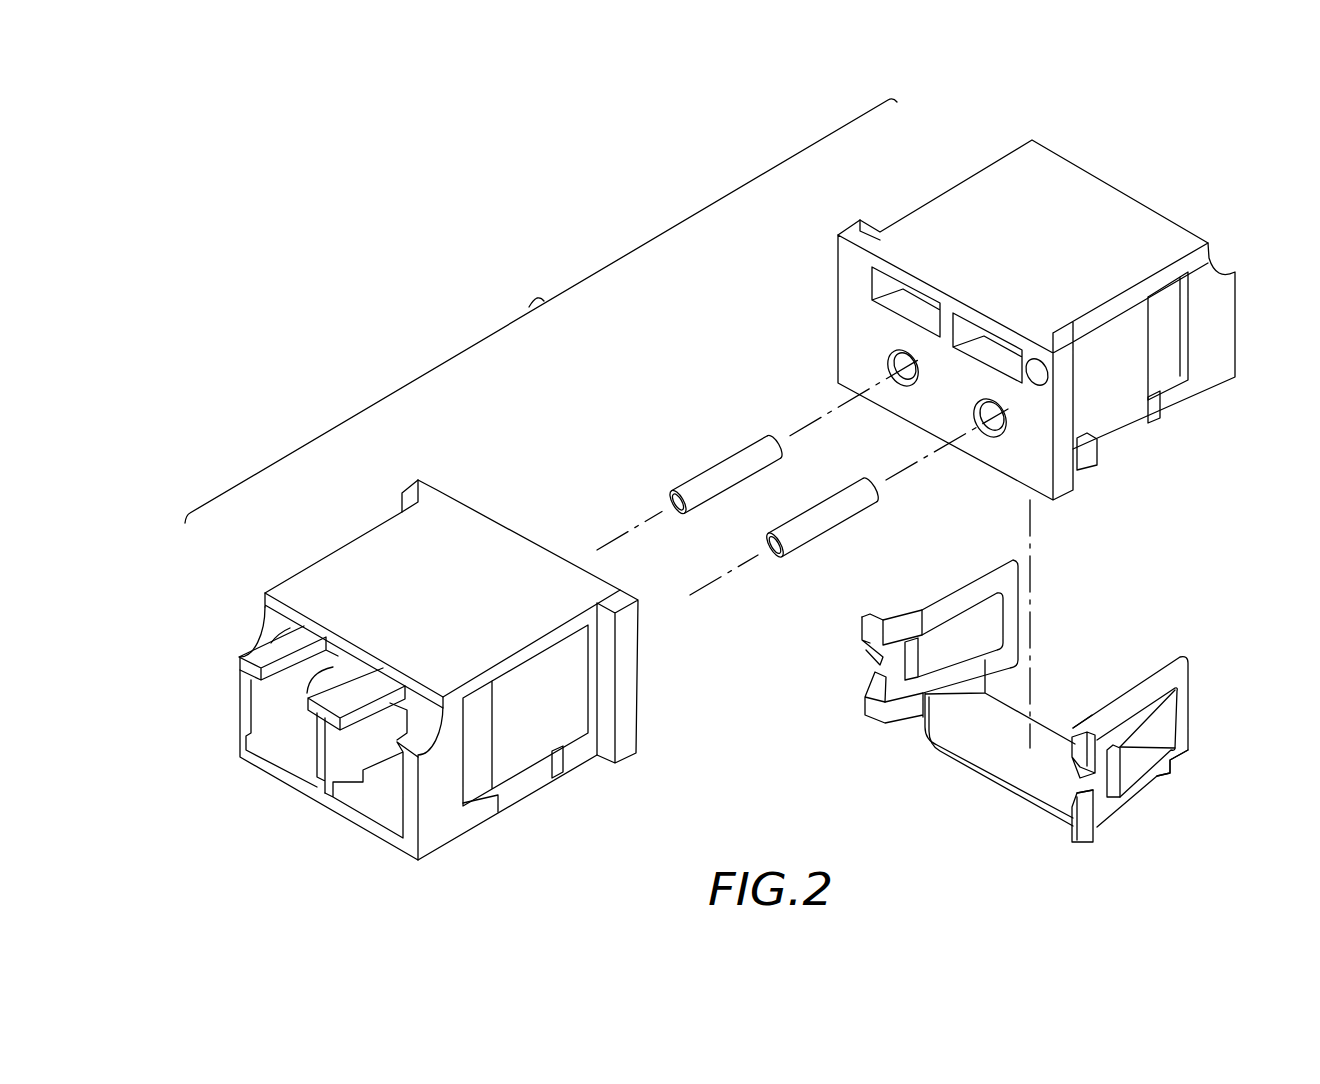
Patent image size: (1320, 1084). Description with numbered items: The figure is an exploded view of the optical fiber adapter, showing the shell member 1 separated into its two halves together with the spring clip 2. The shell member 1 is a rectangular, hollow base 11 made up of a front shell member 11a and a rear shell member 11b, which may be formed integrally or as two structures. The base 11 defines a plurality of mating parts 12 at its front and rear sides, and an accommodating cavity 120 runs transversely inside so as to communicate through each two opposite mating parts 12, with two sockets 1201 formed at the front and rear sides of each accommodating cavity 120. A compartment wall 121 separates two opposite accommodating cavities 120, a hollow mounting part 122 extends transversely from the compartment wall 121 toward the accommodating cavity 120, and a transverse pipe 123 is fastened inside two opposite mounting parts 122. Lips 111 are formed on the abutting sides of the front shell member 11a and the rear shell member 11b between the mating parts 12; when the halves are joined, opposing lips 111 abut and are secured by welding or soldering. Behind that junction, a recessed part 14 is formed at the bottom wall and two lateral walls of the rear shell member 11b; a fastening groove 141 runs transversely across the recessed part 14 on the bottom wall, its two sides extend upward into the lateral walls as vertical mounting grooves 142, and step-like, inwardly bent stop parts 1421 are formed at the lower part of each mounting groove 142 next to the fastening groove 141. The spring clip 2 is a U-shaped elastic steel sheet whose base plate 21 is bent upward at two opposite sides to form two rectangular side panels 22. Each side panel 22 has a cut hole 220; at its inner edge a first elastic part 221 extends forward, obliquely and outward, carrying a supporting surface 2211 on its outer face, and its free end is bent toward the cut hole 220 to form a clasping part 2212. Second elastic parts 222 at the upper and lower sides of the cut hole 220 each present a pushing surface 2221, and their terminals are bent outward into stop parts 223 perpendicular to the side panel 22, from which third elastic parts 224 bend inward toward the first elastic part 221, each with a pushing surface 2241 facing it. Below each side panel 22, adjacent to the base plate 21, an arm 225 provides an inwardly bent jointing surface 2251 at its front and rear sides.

The shell member 1 is at (541, 311).
The base 11 is at (714, 500).
The front shell member 11a is at (401, 670).
The rear shell member 11b is at (1019, 326).
The lip 111 is at (415, 490).
The mating part 12 is at (245, 688).
The accommodating cavity 120 is at (300, 750).
The socket 1201 is at (267, 710).
The compartment wall 121 is at (873, 325).
The mounting part 122 is at (895, 362).
The transverse pipe 123 is at (715, 475).
The recessed part 14 is at (1170, 392).
The fastening groove 141 is at (1145, 422).
The mounting groove 142 is at (1188, 367).
The stop part 1421 is at (1170, 387).
The spring clip 2 is at (1053, 720).
The base plate 21 is at (982, 757).
The side panel 22 is at (1158, 746).
The cut hole 220 is at (1175, 705).
The first elastic part 221 is at (1150, 737).
The supporting surface 2211 is at (1162, 727).
The clasping part 2212 is at (1113, 798).
The second elastic part 222 is at (1073, 727).
The pushing surface 2221 is at (1092, 717).
The stop part 223 is at (1057, 780).
The third elastic part 224 is at (1070, 808).
The pushing surface 2241 is at (1096, 832).
The arm 225 is at (1137, 790).
The jointing surface 2251 is at (1168, 770).